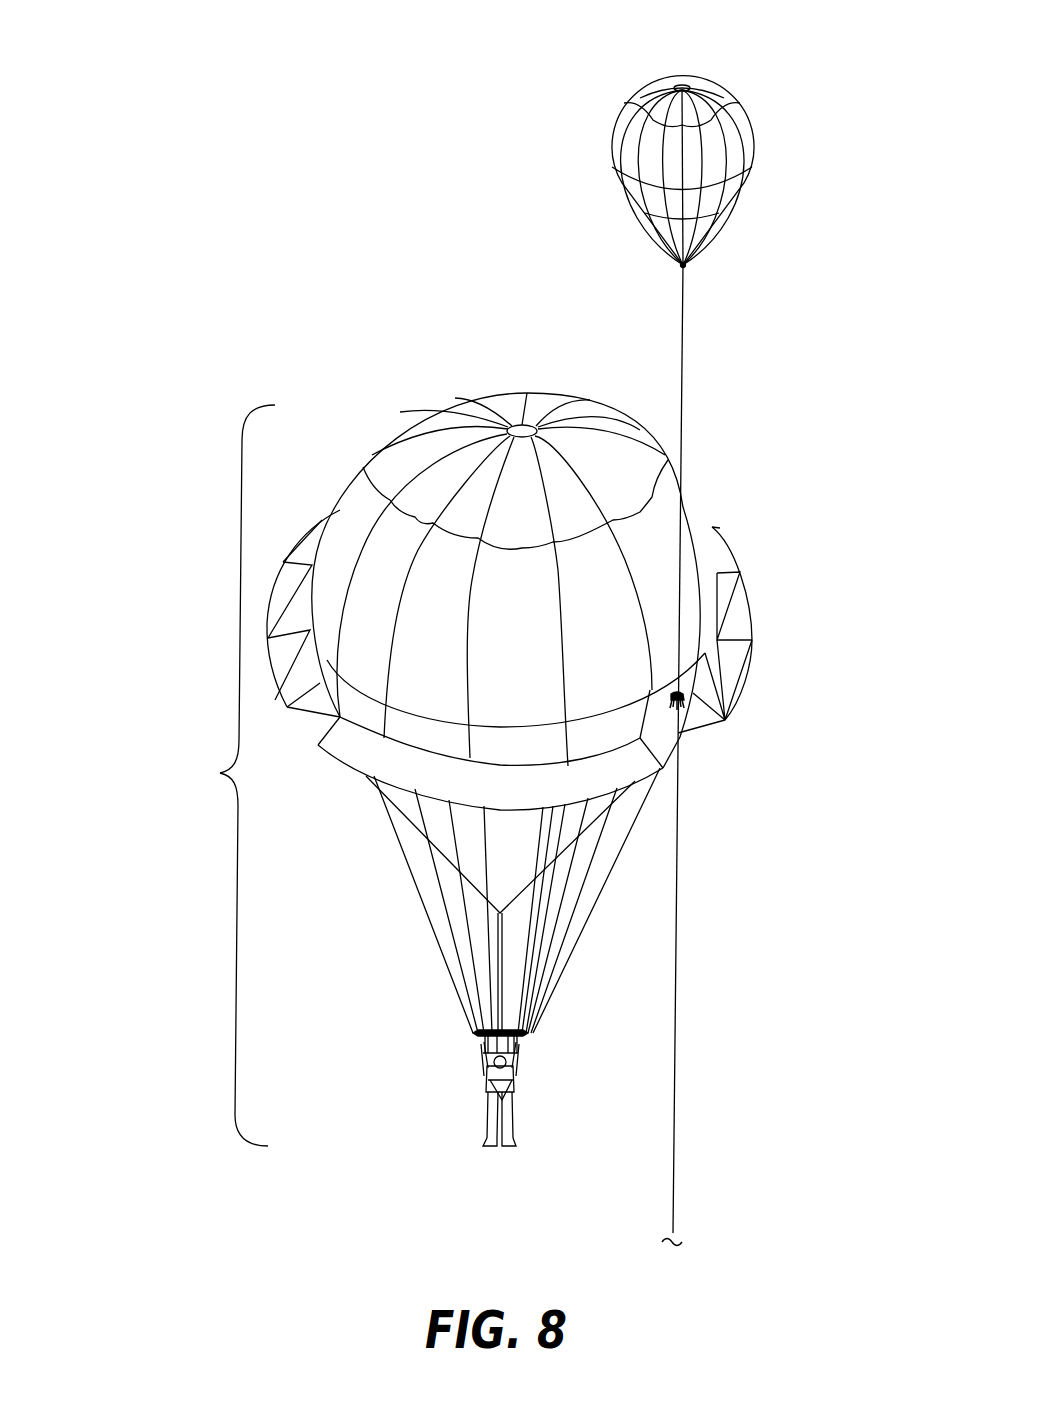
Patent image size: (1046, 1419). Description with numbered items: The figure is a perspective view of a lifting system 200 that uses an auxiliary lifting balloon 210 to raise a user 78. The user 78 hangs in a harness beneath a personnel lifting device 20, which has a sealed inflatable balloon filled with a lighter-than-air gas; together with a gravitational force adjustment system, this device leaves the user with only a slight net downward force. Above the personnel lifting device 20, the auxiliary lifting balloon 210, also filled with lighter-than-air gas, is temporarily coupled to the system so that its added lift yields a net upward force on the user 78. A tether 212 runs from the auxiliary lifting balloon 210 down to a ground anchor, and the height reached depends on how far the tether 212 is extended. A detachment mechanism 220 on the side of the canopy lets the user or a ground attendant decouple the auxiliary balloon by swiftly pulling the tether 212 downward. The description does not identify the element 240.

The lifting system 200 is at (385, 168).
The personnel lifting device 20 is at (425, 408).
The auxiliary lifting balloon 210 is at (728, 95).
The tether 212 is at (682, 388).
The detachment mechanism 220 is at (687, 740).
The overall deployed length 240 is at (213, 773).
The user 78 is at (488, 1083).